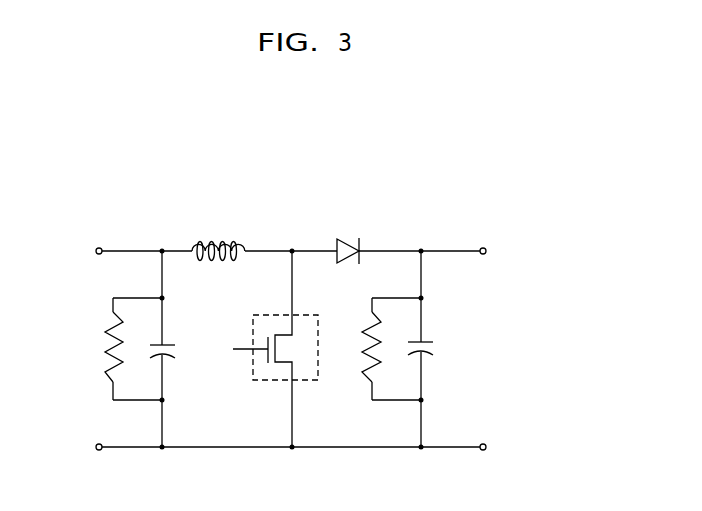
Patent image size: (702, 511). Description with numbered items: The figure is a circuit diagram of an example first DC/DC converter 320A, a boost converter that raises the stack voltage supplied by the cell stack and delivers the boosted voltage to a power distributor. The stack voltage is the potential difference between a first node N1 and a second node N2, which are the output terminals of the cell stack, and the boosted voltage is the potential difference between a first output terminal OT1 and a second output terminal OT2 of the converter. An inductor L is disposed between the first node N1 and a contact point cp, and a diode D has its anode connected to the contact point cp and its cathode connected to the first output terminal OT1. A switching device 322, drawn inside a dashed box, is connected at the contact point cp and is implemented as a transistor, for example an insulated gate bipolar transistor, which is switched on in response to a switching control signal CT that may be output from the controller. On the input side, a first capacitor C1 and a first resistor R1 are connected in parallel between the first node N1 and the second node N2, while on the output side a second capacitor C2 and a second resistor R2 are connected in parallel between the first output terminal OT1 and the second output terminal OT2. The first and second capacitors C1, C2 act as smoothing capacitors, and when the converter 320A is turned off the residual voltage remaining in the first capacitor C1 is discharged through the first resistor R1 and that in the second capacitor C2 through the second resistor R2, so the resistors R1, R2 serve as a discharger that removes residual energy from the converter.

The first DC/DC converter 320A is at (551, 184).
The switching device 322 is at (275, 383).
The first node N1 is at (85, 250).
The second node N2 is at (85, 447).
The first output terminal OT1 is at (503, 251).
The second output terminal OT2 is at (503, 448).
The inductor L is at (218, 237).
The contact point cp is at (291, 234).
The diode D is at (348, 236).
The first capacitor C1 is at (175, 349).
The second capacitor C2 is at (433, 351).
The first resistor R1 is at (120, 349).
The second resistor R2 is at (378, 349).
The switching control signal CT is at (239, 349).